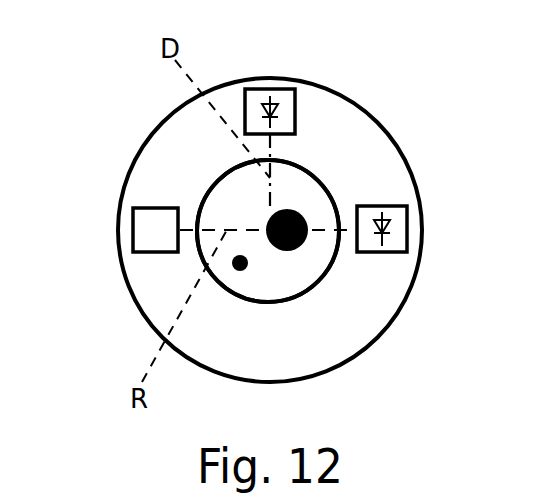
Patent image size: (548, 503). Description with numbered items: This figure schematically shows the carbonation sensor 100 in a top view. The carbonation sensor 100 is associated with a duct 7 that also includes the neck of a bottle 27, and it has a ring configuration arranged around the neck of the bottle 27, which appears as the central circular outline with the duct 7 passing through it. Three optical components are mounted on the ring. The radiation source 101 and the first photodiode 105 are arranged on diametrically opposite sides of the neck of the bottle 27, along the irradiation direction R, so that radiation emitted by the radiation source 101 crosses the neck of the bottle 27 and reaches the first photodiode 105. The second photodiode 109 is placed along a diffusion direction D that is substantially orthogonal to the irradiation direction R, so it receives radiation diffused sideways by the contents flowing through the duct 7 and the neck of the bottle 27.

The carbonation sensor 100 is at (128, 126).
The duct 7 is at (333, 195).
The neck of a bottle 27 is at (326, 286).
The second photodiode 109 is at (302, 112).
The first photodiode 105 is at (390, 262).
The radiation source 101 is at (158, 260).